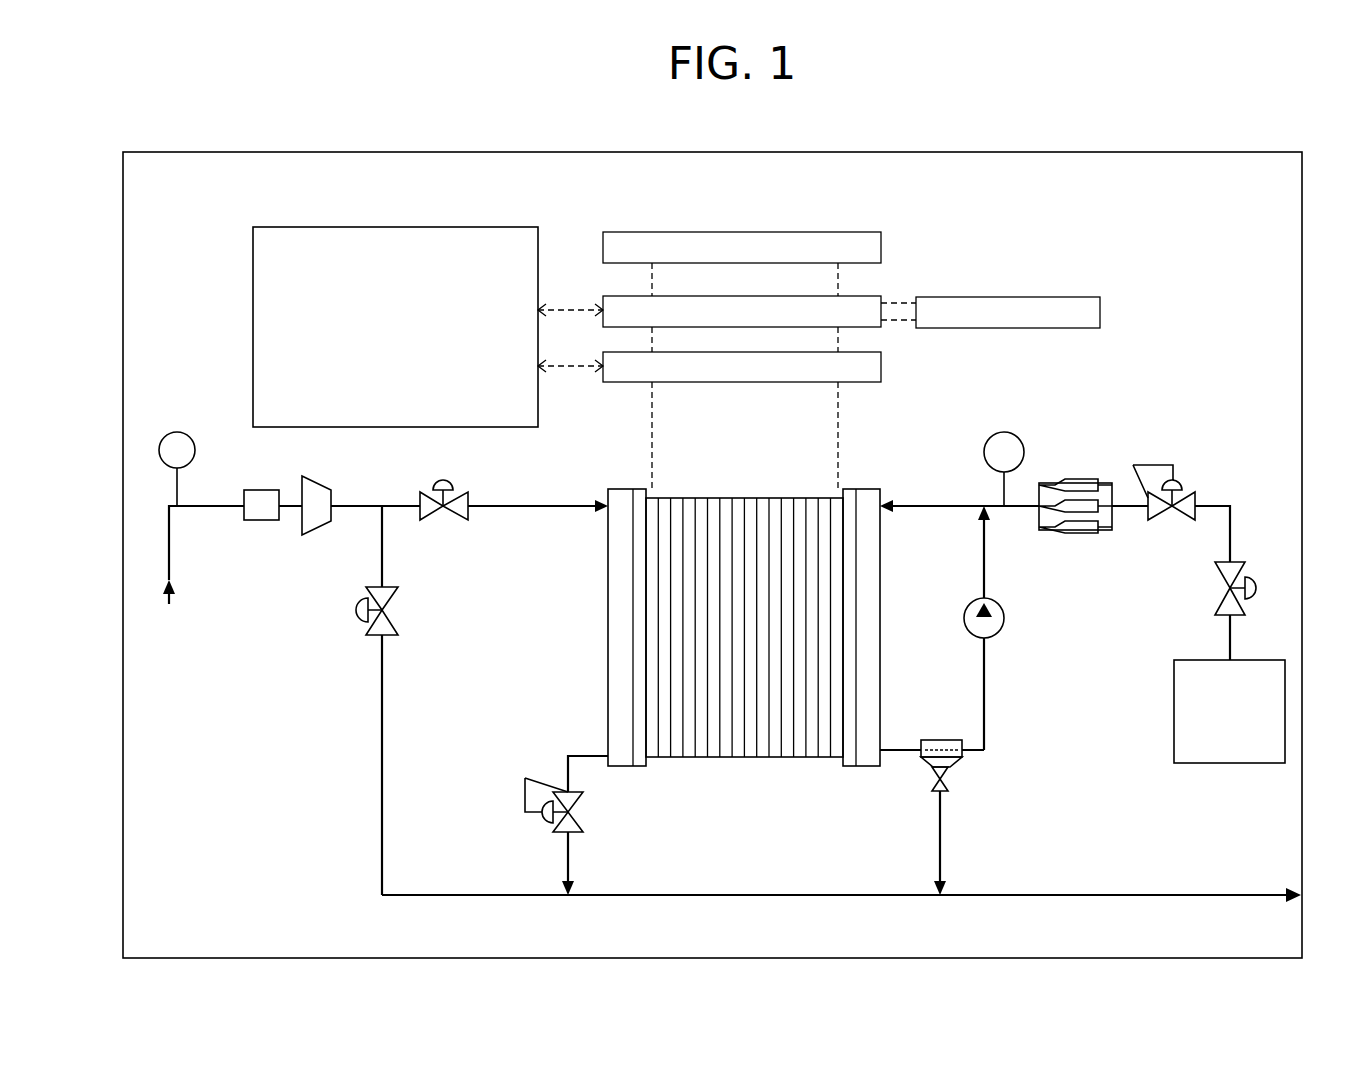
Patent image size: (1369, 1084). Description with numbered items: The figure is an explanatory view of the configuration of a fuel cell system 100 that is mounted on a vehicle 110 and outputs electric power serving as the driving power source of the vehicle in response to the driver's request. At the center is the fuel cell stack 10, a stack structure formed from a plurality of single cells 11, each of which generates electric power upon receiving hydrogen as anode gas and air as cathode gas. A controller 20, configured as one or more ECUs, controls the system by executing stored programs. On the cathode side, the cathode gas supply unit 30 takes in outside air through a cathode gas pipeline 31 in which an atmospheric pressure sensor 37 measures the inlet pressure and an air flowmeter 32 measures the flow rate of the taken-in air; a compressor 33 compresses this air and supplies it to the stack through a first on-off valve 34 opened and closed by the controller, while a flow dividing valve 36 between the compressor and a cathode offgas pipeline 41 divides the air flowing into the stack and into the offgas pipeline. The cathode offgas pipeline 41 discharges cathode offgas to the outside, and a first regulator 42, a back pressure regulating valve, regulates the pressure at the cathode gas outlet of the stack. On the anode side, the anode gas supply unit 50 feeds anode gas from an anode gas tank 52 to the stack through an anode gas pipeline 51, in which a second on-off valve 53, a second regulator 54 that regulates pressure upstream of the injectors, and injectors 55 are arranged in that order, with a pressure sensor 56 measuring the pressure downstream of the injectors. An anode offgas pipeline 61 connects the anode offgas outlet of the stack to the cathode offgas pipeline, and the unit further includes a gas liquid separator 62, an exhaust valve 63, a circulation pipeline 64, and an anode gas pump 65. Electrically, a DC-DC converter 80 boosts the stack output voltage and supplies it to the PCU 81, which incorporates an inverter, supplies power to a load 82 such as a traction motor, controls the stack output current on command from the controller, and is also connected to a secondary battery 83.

The fuel cell stack 10 is at (746, 666).
The single cell 11 is at (775, 757).
The controller 20 is at (478, 227).
The cathode gas supply unit 30 is at (248, 307).
The cathode gas pipeline 31 is at (172, 540).
The air flowmeter 32 is at (262, 490).
The compressor 33 is at (313, 476).
The first on-off valve 34 is at (455, 484).
The flow dividing valve 36 is at (368, 622).
The atmospheric pressure sensor 37 is at (180, 433).
The cathode offgas pipeline 41 is at (735, 897).
The first regulator 42 is at (542, 822).
The anode gas supply unit 50 is at (248, 350).
The anode gas pipeline 51 is at (1232, 537).
The anode gas tank 52 is at (1250, 660).
The second on-off valve 53 is at (1225, 598).
The second regulator 54 is at (1193, 493).
The injectors 55 is at (1082, 472).
The pressure sensor 56 is at (1024, 446).
The anode offgas pipeline 61 is at (903, 758).
The gas liquid separator 62 is at (952, 767).
The exhaust valve 63 is at (946, 791).
The circulation pipeline 64 is at (983, 700).
The anode gas pump 65 is at (963, 611).
The DC-DC converter 80 is at (881, 373).
The power control unit (PCU) 81 is at (866, 296).
The load 82 is at (866, 232).
The secondary battery 83 is at (1100, 313).
The fuel cell system 100 is at (1148, 251).
The vehicle 110 is at (1266, 152).